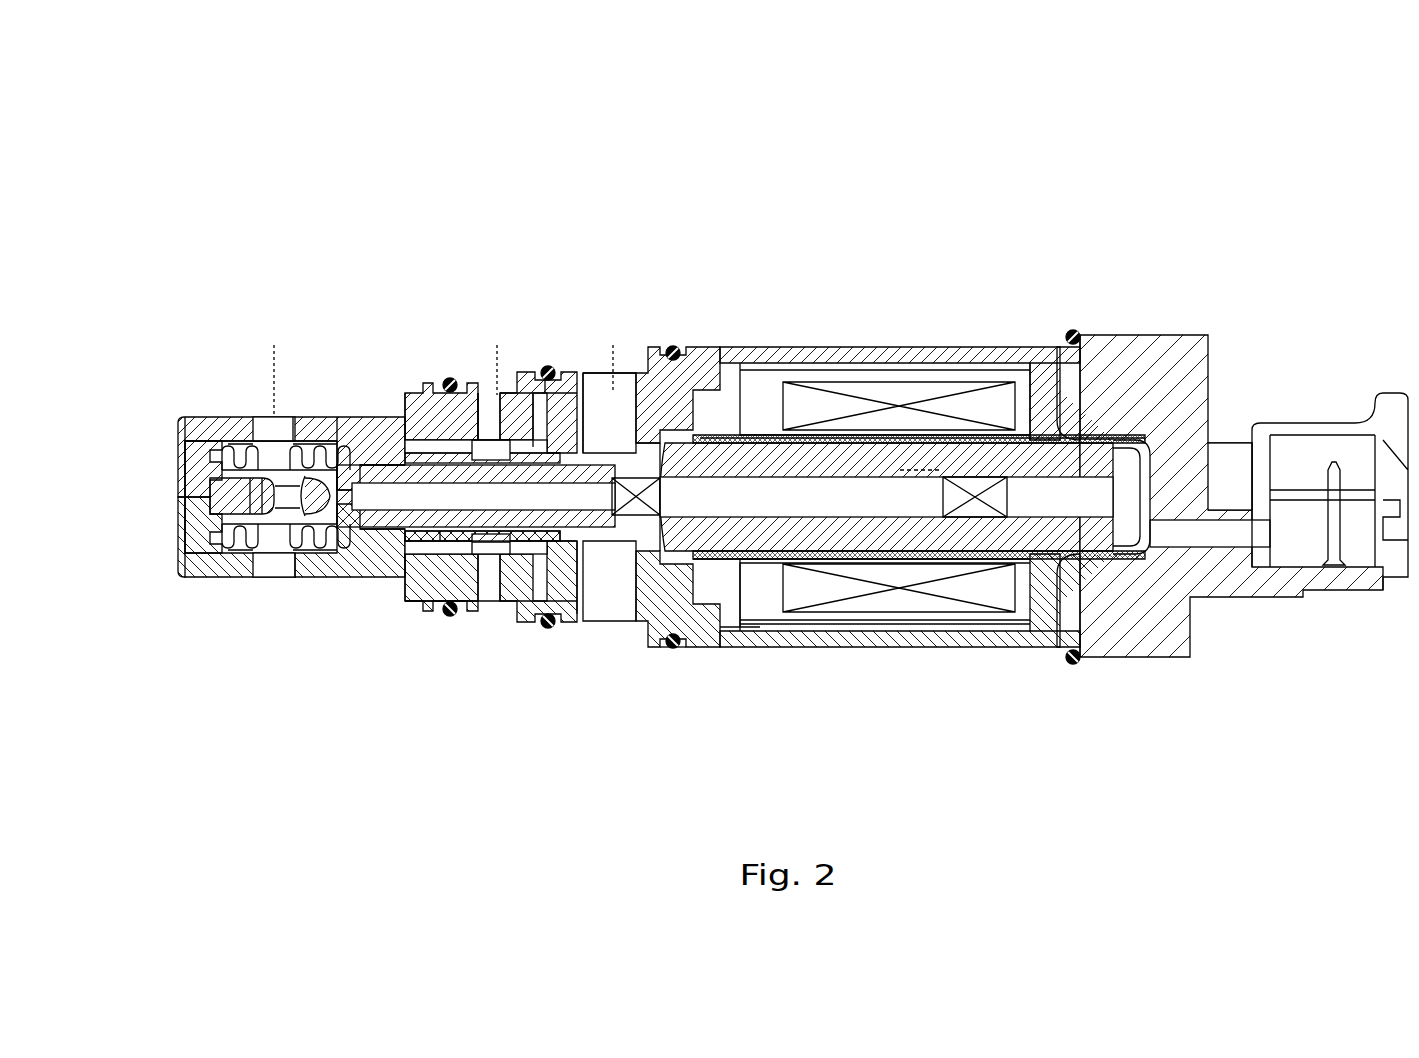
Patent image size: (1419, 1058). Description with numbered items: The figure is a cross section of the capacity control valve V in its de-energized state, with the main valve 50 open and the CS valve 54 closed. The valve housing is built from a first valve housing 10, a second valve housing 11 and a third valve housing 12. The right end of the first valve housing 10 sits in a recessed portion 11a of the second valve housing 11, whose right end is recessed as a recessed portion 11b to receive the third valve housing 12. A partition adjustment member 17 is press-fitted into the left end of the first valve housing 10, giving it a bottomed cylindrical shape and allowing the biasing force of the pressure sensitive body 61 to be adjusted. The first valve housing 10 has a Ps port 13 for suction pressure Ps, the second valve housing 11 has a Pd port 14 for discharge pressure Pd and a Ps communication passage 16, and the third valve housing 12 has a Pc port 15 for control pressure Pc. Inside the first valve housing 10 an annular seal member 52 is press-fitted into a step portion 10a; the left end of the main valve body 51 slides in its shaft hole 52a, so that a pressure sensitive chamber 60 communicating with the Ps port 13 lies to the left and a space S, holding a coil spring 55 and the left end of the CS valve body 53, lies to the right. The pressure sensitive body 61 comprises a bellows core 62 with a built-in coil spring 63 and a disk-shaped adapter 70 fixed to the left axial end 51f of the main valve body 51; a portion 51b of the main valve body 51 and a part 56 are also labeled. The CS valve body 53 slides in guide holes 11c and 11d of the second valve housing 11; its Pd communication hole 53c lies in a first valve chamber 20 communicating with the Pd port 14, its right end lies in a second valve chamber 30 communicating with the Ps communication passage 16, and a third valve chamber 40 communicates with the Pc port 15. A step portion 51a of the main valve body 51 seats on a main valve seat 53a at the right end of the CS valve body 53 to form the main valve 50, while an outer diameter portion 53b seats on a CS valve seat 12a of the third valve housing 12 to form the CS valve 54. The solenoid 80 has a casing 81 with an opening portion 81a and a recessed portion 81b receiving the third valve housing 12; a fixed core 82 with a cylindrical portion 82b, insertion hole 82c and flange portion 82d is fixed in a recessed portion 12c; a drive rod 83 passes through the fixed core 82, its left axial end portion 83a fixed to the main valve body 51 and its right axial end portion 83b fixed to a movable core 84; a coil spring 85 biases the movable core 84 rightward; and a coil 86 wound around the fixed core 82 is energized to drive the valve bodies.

The first valve housing 10 is at (190, 405).
The step portion 10a is at (300, 578).
The second valve housing 11 is at (470, 598).
The recessed portion 11a is at (402, 578).
The recessed portion 11b is at (590, 578).
The guide hole 11c is at (405, 438).
The guide hole 11d is at (522, 430).
The third valve housing 12 is at (640, 630).
The CS valve seat 12a is at (537, 438).
The recessed portion 12c is at (674, 648).
The Ps port 13 is at (256, 440).
The Pd port 14 is at (452, 398).
The Pc port 15 is at (583, 400).
The Ps communication passage 16 is at (420, 603).
The partition adjustment member 17 is at (180, 440).
The first valve chamber 20 is at (490, 436).
The second valve chamber 30 is at (588, 573).
The third valve chamber 40 is at (625, 400).
The main valve 50 is at (606, 768).
The main valve body 51 is at (300, 504).
The step portion 51a is at (548, 622).
The rod portion 51b is at (660, 470).
The left axial end 51f is at (300, 495).
The seal member 52 is at (348, 432).
The shaft hole 52a is at (330, 452).
The CS valve body 53 is at (488, 557).
The main valve seat 53a is at (490, 612).
The outer diameter portion 53b is at (560, 440).
The Pd communication hole 53c is at (445, 578).
The CS valve 54 is at (638, 160).
The coil spring 55 is at (348, 470).
The support 56 is at (360, 576).
The pressure sensitive chamber 60 is at (210, 445).
The pressure sensitive body 61 is at (225, 578).
The bellows core 62 is at (240, 578).
The coil spring 63 is at (300, 576).
The adapter 70 is at (335, 576).
The solenoid 80 is at (1165, 325).
The casing 81 is at (705, 660).
The opening portion 81a is at (800, 720).
The recessed portion 81b is at (765, 640).
The fixed core 82 is at (930, 470).
The cylindrical portion 82b is at (902, 440).
The insertion hole 82c is at (857, 440).
The flange portion 82d is at (700, 438).
The drive rod 83 is at (1005, 372).
The left axial end portion 83a is at (750, 438).
The right axial end portion 83b is at (1058, 360).
The movable core 84 is at (1060, 652).
The coil spring 85 is at (985, 647).
The coil 86 is at (910, 647).
The space S is at (366, 445).
The capacity control valve V is at (1300, 133).
The suction pressure Ps is at (271, 369).
The discharge pressure Pd is at (497, 358).
The control pressure Pc is at (613, 356).